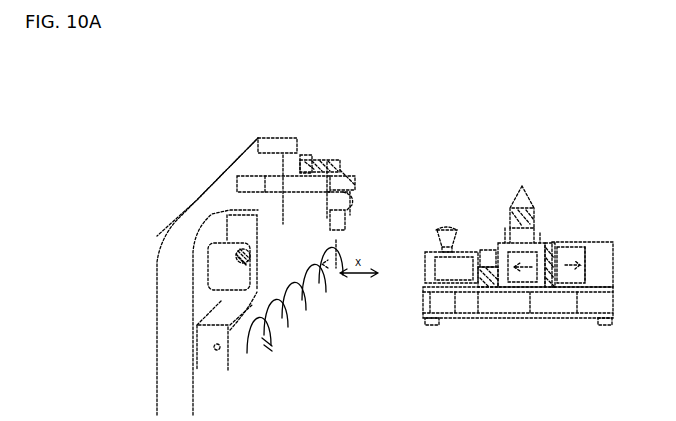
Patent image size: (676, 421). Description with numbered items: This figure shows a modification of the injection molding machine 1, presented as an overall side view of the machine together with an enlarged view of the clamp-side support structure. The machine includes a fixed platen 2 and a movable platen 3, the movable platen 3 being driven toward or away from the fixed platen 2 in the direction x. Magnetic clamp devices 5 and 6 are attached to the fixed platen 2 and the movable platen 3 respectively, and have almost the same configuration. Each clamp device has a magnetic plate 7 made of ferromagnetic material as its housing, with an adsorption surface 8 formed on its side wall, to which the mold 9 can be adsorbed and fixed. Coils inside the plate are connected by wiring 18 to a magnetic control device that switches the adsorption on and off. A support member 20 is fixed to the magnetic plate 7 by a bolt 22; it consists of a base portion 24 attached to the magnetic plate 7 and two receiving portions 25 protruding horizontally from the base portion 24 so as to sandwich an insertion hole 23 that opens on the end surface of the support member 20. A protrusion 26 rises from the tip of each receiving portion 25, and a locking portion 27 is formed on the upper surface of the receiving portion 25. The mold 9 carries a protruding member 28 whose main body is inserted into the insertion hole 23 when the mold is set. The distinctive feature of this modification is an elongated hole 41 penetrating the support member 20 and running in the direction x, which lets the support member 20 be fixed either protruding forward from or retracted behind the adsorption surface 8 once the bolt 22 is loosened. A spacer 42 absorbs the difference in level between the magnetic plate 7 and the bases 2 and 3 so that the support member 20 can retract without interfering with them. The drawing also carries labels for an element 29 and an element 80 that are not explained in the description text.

The injection molding machine 1 is at (600, 228).
The fixed platen 2 is at (158, 337).
The movable platen 3 is at (340, 238).
The magnetic clamp device 5 is at (504, 290).
The magnetic clamp device 6 is at (520, 290).
The magnetic plate 7 is at (348, 226).
The adsorption surface 8 is at (236, 256).
The mold 9 is at (536, 212).
The wiring 18 is at (275, 343).
The support member 20 is at (345, 158).
The bolt 22 is at (258, 139).
The insertion hole 23 is at (305, 148).
The base portion 24 is at (237, 181).
The receiving portion 25 is at (342, 190).
The protrusion 26 is at (350, 168).
The locking portion 27 is at (345, 160).
The protruding member 28 is at (530, 198).
The bracket 29 is at (542, 240).
The elongated hole 41 is at (292, 146).
The spacer 42 is at (168, 228).
The controller 80 is at (505, 226).